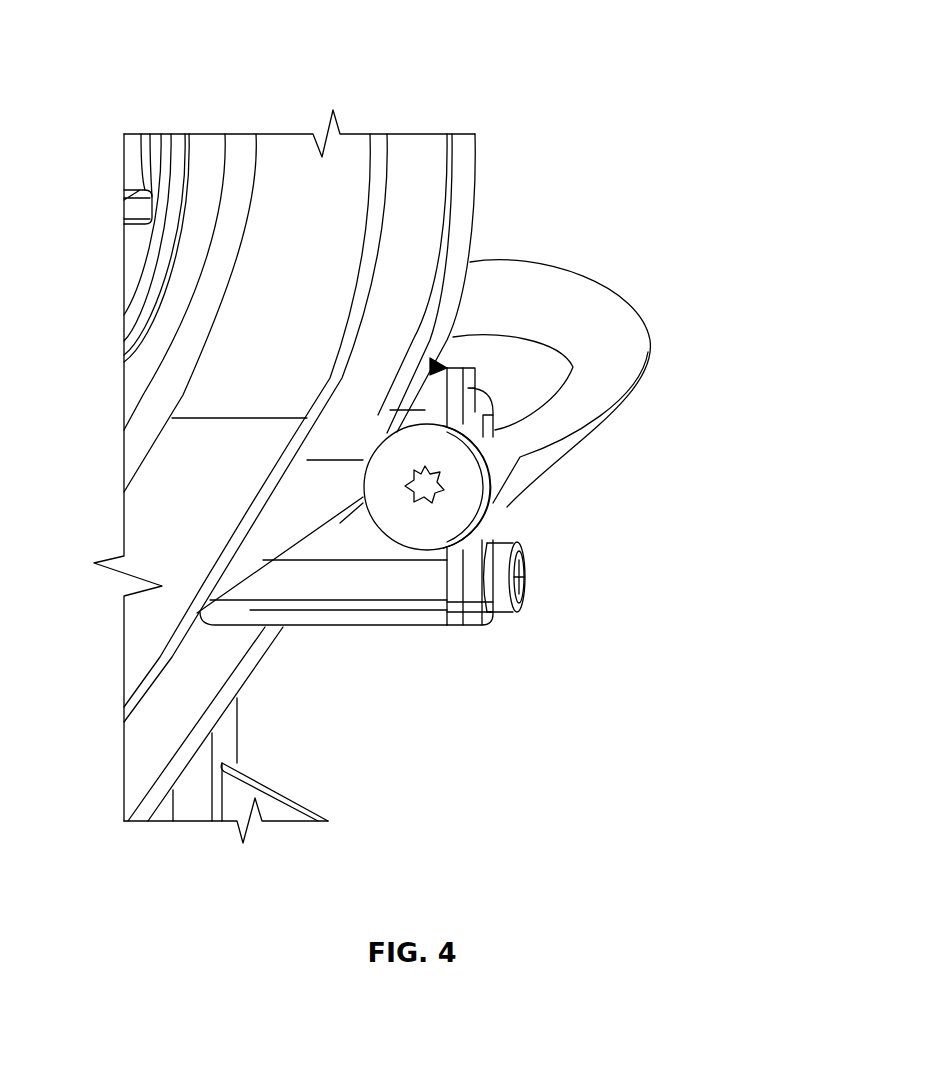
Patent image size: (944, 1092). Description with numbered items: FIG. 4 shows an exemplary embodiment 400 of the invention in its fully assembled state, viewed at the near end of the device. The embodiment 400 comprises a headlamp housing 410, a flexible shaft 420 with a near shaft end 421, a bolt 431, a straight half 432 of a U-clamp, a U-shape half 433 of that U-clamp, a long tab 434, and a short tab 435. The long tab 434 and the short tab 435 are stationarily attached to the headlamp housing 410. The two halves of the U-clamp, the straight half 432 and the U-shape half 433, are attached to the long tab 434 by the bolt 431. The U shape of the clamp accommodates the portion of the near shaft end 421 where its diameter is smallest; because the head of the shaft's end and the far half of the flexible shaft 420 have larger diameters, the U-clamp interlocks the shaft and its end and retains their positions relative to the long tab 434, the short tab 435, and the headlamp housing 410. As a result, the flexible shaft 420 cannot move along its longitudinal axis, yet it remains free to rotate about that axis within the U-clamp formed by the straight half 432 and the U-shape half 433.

The embodiment 400 is at (598, 165).
The headlamp housing 410 is at (270, 270).
The flexible shaft 420 is at (608, 313).
The near shaft end 421 is at (462, 513).
The bolt 431 is at (537, 590).
The straight half of U-clamp 432 is at (485, 628).
The U-shape half of U-clamp 433 is at (455, 622).
The long tab 434 is at (277, 587).
The short tab 435 is at (425, 408).